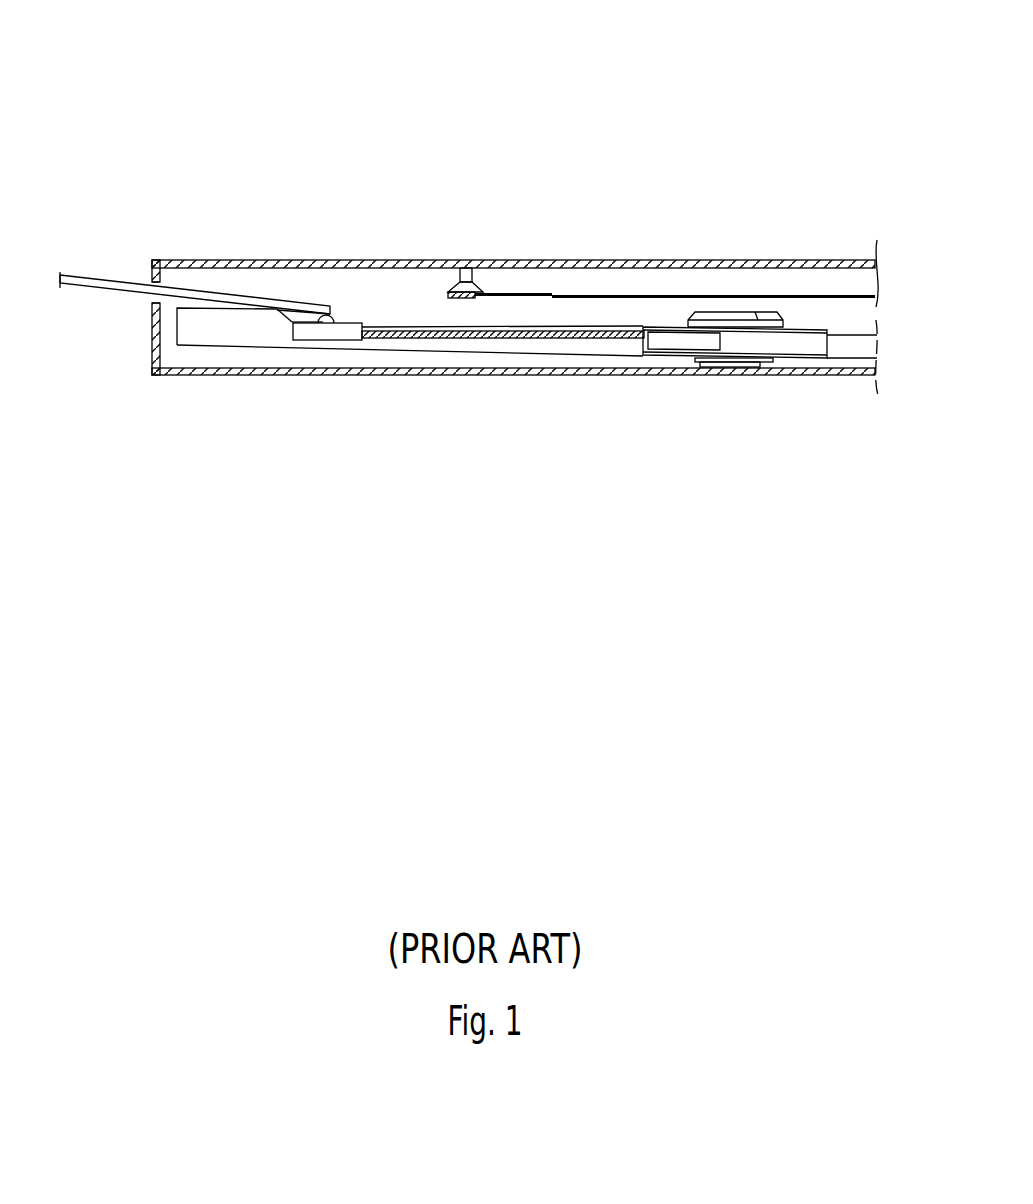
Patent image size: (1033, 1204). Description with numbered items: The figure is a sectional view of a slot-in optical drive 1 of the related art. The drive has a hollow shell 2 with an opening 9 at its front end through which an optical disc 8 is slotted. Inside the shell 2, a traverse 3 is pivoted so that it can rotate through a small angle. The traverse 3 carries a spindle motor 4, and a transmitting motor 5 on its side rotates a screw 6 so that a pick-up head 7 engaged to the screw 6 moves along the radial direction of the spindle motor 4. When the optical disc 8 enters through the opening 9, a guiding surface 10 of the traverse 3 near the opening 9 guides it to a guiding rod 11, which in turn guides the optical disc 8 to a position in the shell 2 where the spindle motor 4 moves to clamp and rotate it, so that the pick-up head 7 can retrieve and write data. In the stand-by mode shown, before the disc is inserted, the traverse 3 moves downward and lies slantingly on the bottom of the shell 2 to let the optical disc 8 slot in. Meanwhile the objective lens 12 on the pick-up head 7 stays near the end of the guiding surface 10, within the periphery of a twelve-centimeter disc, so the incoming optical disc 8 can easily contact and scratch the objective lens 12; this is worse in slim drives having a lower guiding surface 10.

The optical drive 1 is at (862, 67).
The hollow shell 2 is at (632, 262).
The traverse 3 is at (262, 348).
The spindle motor 4 is at (827, 340).
The transmitting motor 5 is at (722, 337).
The screw 6 is at (497, 337).
The pick-up head 7 is at (327, 340).
The optical disc 8 is at (105, 275).
The opening 9 is at (150, 298).
The guiding surface 10 is at (210, 308).
The guiding rod 11 is at (502, 290).
The objective lens 12 is at (330, 317).